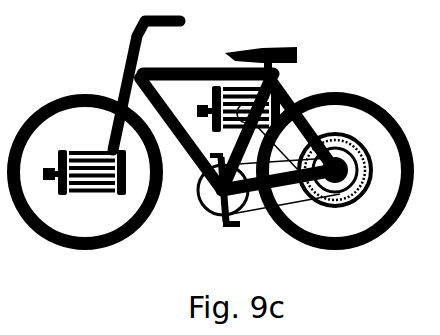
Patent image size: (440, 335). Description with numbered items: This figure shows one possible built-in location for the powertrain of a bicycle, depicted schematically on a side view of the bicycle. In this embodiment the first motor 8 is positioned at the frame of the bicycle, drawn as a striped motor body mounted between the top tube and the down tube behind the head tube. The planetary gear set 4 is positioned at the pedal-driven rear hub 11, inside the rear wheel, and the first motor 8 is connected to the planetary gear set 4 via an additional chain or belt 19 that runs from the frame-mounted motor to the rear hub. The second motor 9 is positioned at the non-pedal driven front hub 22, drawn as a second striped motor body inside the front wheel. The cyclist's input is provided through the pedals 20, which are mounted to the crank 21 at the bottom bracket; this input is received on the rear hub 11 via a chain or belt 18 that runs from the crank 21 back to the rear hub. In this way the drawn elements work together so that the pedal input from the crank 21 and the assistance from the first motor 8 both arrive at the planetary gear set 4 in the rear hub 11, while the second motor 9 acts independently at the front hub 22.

The planetary gear set 4 is at (343, 133).
The first motor 8 is at (266, 93).
The second motor 9 is at (73, 169).
The pedal-driven rear hub 11 is at (335, 169).
The chain or belt 18 is at (258, 210).
The additional chain or belt 19 is at (277, 100).
The pedals 20 is at (220, 228).
The crank 21 is at (213, 203).
The non-pedal driven front hub 22 is at (93, 182).